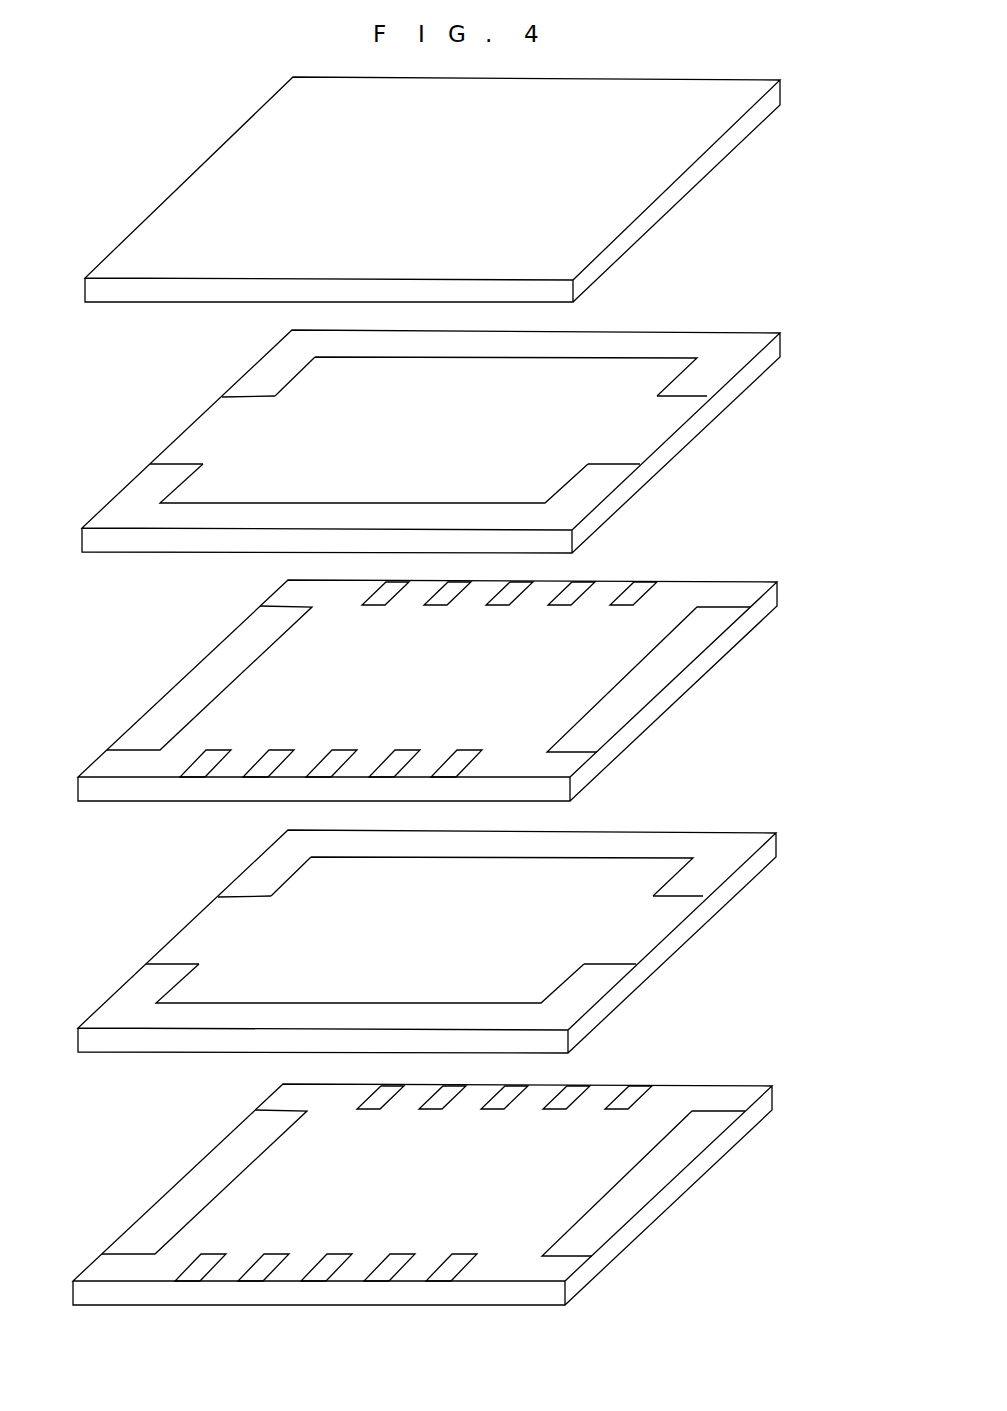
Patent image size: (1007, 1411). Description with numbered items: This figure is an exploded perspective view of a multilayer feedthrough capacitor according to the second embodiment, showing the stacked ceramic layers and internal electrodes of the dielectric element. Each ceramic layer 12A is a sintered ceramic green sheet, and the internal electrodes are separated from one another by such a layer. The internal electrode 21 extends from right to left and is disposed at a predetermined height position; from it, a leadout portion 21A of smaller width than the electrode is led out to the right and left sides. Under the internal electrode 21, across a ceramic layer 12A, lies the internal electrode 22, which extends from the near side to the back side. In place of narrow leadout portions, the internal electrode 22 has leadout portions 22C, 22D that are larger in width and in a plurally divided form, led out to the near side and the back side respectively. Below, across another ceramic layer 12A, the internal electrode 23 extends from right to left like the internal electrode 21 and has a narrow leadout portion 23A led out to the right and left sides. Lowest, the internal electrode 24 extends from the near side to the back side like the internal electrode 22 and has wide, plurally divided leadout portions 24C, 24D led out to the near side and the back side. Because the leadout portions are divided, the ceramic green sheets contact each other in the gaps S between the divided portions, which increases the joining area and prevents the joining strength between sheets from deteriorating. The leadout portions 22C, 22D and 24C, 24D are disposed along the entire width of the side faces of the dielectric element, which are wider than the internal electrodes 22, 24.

The ceramic layer 12A is at (603, 198).
The internal electrode 21 is at (655, 357).
The leadout portion 21A is at (245, 393).
The internal electrode 22 is at (690, 625).
The leadout portion 22C is at (560, 592).
The leadout portion 22D is at (347, 593).
The gap S is at (508, 595).
The internal electrode 23 is at (438, 922).
The leadout portion 23A is at (472, 901).
The internal electrode 24 is at (418, 1182).
The leadout portion 24C is at (412, 1187).
The leadout portion 24D is at (405, 1182).